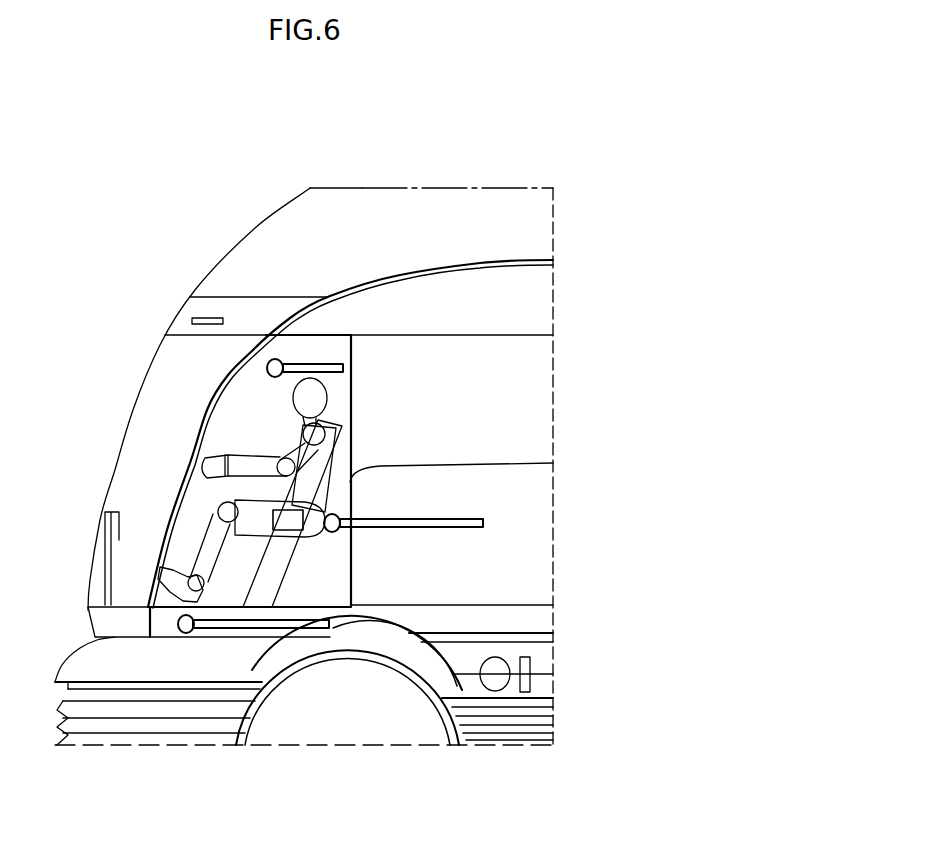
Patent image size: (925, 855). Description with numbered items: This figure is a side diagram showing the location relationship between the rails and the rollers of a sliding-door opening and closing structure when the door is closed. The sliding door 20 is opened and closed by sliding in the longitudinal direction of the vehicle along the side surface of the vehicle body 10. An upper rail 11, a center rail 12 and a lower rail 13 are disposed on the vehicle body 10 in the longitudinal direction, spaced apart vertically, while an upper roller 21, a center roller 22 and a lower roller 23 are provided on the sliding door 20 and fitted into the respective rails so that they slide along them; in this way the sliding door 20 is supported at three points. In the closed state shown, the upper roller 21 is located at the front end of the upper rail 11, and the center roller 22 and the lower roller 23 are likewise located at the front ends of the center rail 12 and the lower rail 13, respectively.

The vehicle body 10 is at (495, 303).
The sliding door 20 is at (235, 425).
The upper rail 11 is at (310, 362).
The center rail 12 is at (457, 520).
The lower rail 13 is at (272, 631).
The upper roller 21 is at (273, 359).
The center roller 22 is at (336, 514).
The lower roller 23 is at (181, 633).